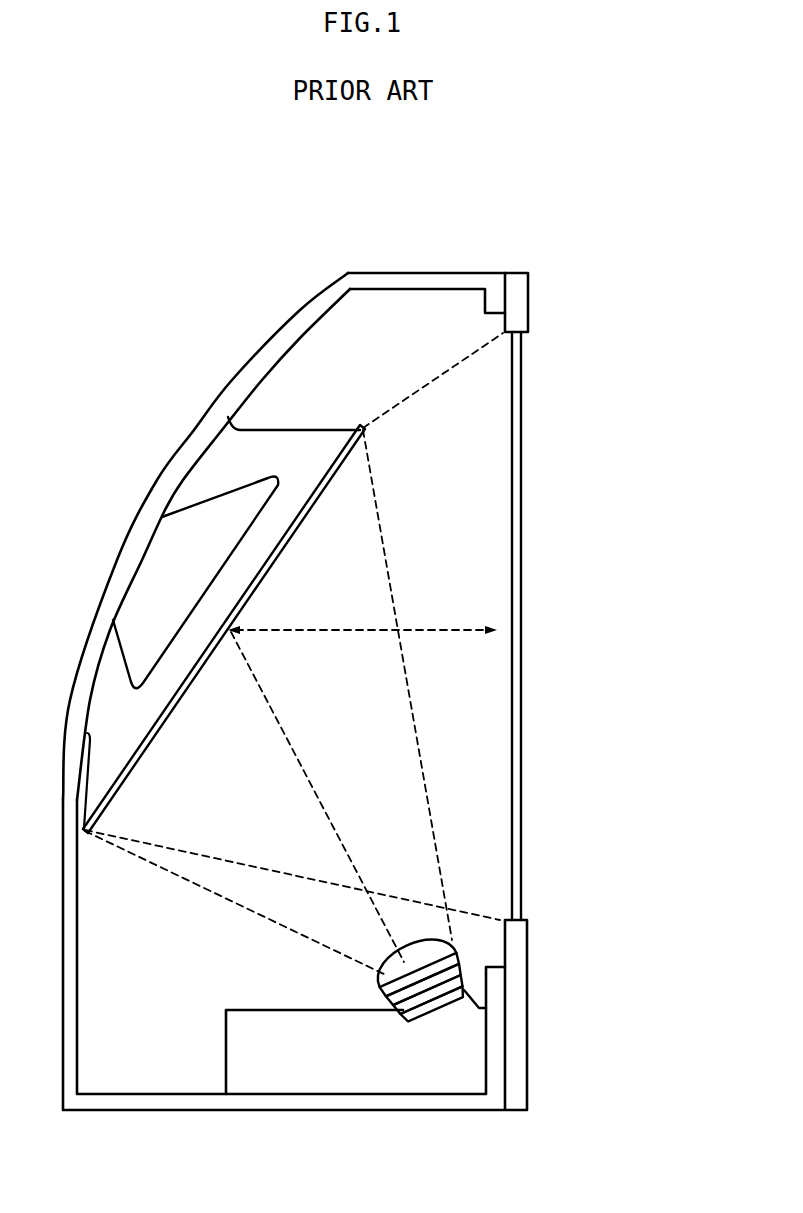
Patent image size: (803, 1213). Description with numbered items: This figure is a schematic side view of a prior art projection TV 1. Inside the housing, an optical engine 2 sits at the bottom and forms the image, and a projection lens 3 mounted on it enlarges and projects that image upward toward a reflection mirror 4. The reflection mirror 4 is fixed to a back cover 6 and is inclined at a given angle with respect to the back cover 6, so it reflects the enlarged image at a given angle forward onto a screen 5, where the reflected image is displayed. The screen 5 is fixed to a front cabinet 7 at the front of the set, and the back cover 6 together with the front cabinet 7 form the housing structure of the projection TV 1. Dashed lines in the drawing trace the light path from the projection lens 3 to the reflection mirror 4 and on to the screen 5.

The projection TV 1 is at (235, 155).
The optical engine 2 is at (358, 1073).
The projection lens 3 is at (425, 948).
The reflection mirror 4 is at (155, 737).
The screen 5 is at (521, 542).
The back cover 6 is at (188, 425).
The front cabinet 7 is at (536, 307).